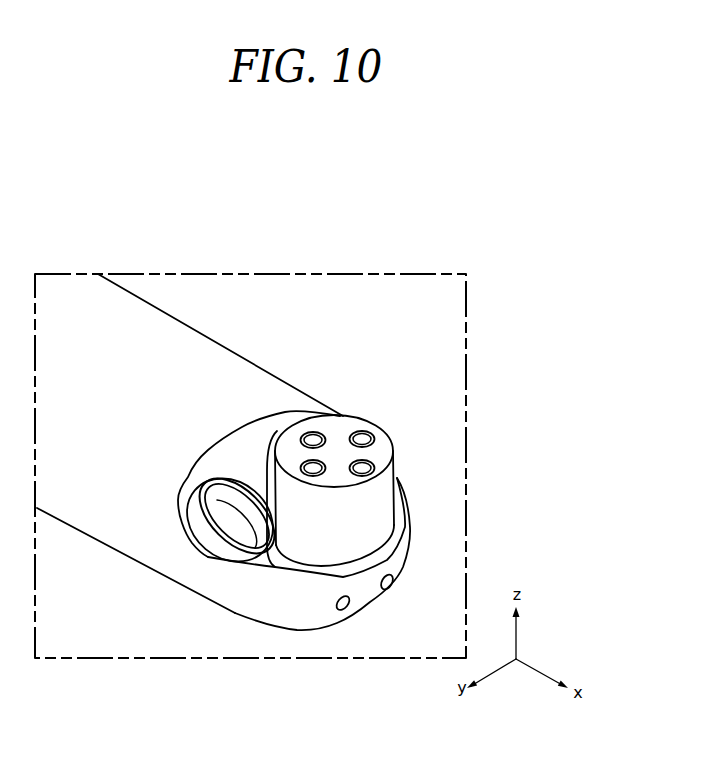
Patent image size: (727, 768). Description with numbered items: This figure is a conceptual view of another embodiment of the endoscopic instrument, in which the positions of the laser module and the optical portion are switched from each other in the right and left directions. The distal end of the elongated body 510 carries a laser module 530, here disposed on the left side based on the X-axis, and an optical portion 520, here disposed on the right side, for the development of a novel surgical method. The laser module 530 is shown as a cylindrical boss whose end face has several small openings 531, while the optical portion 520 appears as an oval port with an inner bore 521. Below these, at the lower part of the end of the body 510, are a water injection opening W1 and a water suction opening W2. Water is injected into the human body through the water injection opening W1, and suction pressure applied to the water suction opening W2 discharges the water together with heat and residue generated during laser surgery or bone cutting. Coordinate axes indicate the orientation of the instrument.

The body 510 is at (143, 325).
The optical portion 520 is at (213, 530).
The port bore 521 is at (264, 545).
The laser module 530 is at (400, 430).
The holes 531 is at (362, 441).
The water injection opening W1 is at (346, 609).
The water suction opening W2 is at (389, 589).